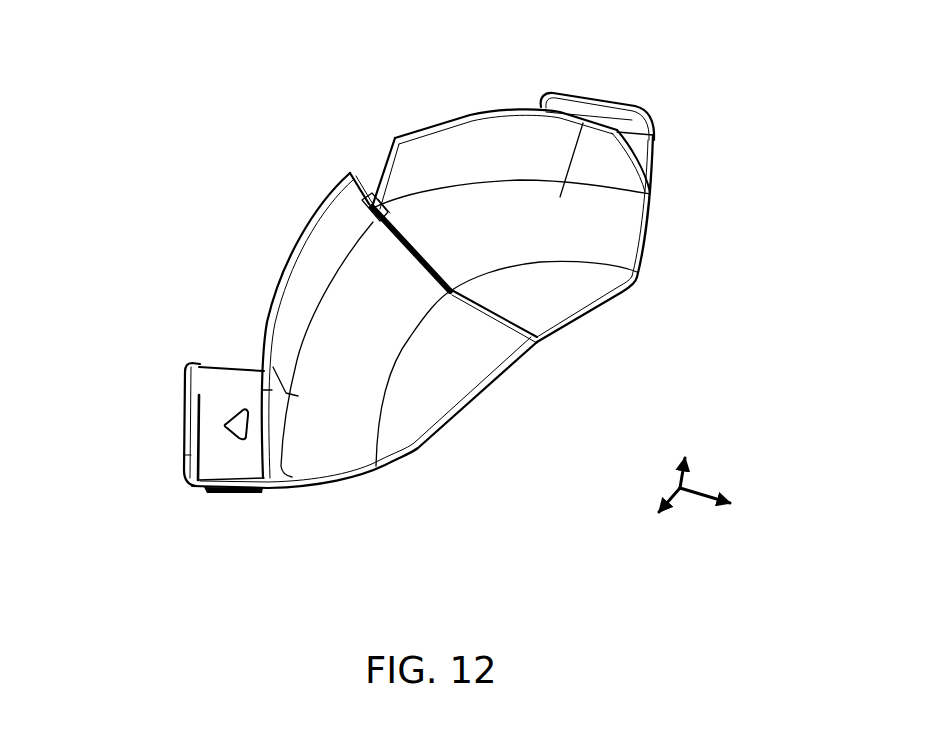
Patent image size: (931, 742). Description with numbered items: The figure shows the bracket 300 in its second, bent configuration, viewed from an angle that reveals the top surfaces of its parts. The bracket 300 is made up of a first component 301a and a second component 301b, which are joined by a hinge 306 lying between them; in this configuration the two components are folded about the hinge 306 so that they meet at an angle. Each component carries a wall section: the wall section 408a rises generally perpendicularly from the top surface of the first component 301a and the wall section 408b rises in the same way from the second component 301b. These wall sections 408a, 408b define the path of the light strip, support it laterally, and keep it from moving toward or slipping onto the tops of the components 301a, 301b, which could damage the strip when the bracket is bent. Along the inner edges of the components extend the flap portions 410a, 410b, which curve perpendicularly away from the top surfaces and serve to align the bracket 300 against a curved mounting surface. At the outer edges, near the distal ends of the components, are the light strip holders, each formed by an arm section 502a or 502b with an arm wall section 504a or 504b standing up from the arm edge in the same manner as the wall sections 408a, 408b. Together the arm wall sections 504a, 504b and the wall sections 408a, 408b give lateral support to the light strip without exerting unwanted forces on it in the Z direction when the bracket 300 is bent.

The bracket 300 is at (272, 110).
The first component 301a is at (395, 516).
The second component 301b is at (706, 294).
The hinge 306 is at (427, 256).
The wall section 408a is at (307, 221).
The wall section 408b is at (495, 107).
The flap portion 410a is at (460, 414).
The flap portion 410b is at (570, 330).
The arm section 502a is at (235, 368).
The arm section 502b is at (654, 160).
The arm wall section 504a is at (186, 380).
The arm wall section 504b is at (601, 100).